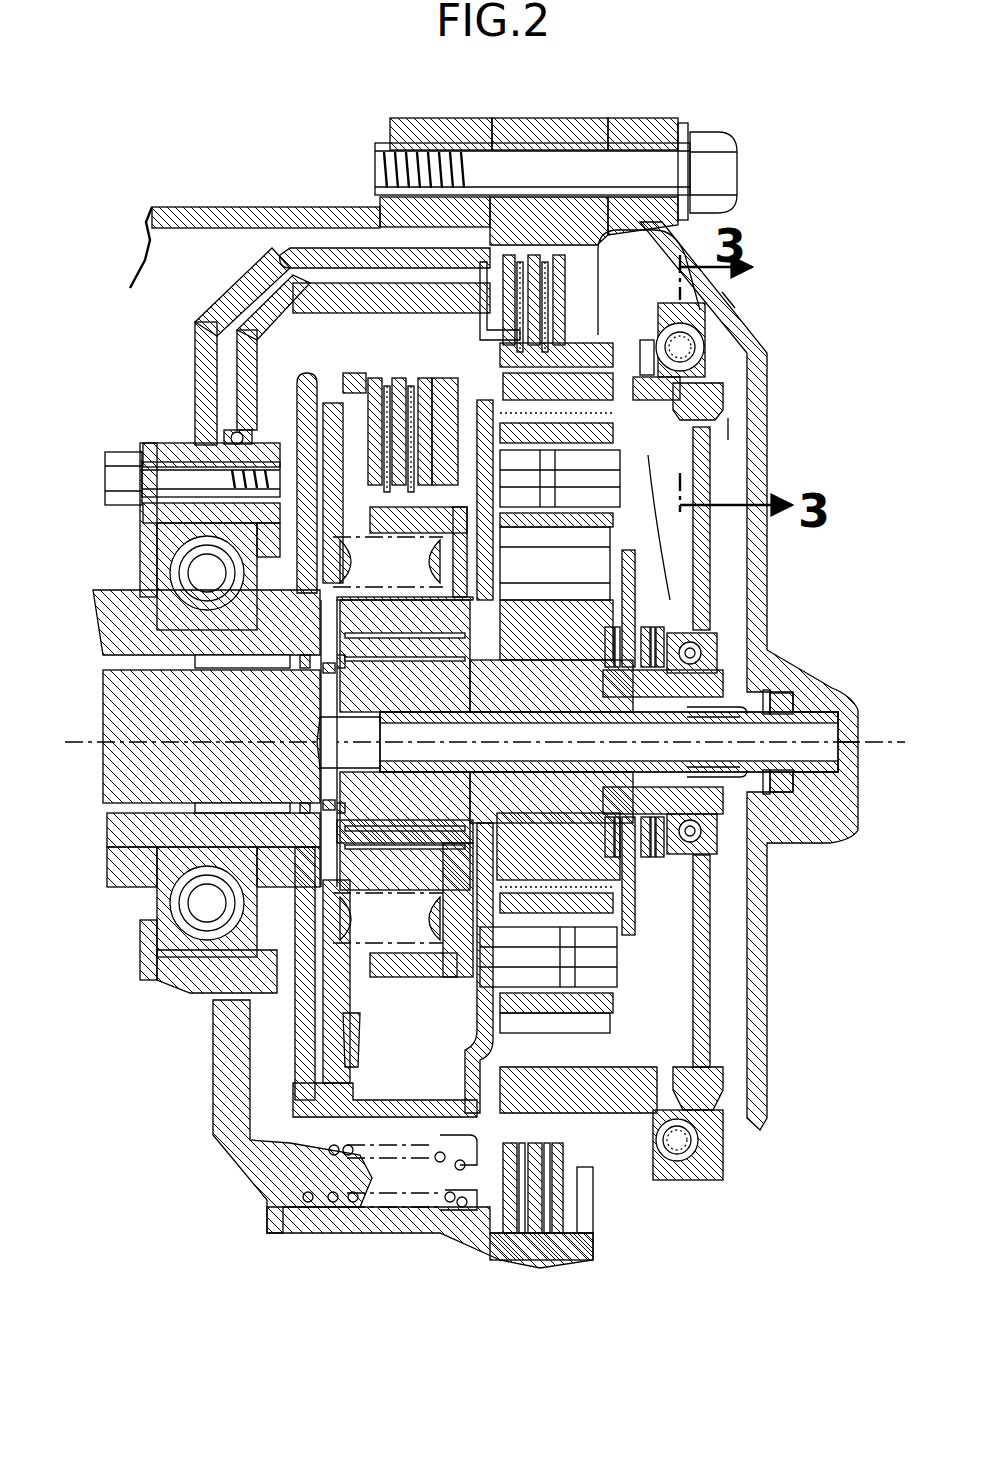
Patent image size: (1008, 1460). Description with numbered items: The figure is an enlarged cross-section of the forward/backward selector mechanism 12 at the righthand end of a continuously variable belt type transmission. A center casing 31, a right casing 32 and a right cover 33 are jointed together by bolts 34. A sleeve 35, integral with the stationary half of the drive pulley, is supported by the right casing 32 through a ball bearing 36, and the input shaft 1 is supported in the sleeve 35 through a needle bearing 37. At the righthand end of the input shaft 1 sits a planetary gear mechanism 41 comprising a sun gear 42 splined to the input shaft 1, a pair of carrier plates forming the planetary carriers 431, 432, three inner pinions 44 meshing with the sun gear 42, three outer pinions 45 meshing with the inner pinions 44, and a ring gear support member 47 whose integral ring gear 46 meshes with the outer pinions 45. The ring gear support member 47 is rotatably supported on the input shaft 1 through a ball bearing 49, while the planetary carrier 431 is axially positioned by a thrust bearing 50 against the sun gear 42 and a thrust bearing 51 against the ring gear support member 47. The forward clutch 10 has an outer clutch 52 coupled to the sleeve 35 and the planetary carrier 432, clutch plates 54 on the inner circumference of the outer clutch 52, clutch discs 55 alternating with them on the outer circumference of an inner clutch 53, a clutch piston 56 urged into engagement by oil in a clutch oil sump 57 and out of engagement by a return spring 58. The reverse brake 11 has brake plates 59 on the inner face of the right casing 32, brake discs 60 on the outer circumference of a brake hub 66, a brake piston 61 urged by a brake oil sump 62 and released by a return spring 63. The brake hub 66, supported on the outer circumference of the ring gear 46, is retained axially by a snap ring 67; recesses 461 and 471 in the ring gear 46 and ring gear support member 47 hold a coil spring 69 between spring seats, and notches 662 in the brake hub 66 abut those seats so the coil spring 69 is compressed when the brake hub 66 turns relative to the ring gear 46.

The input shaft 1 is at (169, 712).
The forward clutch 10 is at (282, 332).
The reverse brake 11 is at (538, 245).
The forward/backward selector mechanism 12 is at (748, 406).
The center casing 31 is at (446, 118).
The right casing 32 is at (542, 118).
The right cover 33 is at (648, 118).
The bolt 34 is at (725, 162).
The sleeve 35 is at (135, 600).
The ball bearing 36 is at (200, 897).
The needle bearing 37 is at (236, 668).
The planetary gear mechanism 41 is at (662, 560).
The sun gear 42 is at (553, 547).
The planetary carrier 431 is at (640, 602).
The planetary carrier 432 is at (559, 311).
The inner pinion 44 is at (545, 1005).
The outer pinion 45 is at (553, 510).
The ring gear 46 is at (726, 434).
The recess 461 is at (725, 392).
The ring gear support member 47 is at (705, 340).
The recess 471 is at (665, 310).
The ball bearing 49 is at (700, 840).
The thrust bearing 50 is at (615, 650).
The thrust bearing 51 is at (682, 640).
The outer clutch 52 is at (310, 378).
The inner clutch 53 is at (437, 985).
The clutch plate 54 is at (420, 378).
The clutch disc 55 is at (380, 507).
The clutch piston 56 is at (332, 1014).
The clutch oil sump 57 is at (307, 903).
The return spring 58 is at (350, 913).
The brake plate 59 is at (560, 1240).
The brake disc 60 is at (585, 300).
The brake piston 61 is at (250, 432).
The brake oil sump 62 is at (205, 356).
The return spring 63 is at (332, 1152).
The brake hub 66 is at (492, 363).
The notch 662 is at (742, 292).
The snap ring 67 is at (642, 345).
The coil spring 69 is at (735, 330).